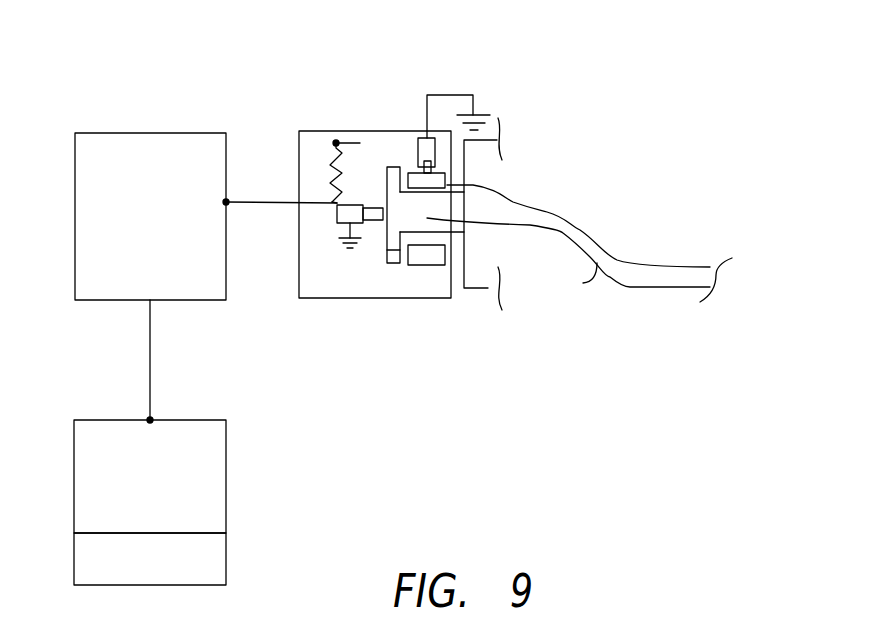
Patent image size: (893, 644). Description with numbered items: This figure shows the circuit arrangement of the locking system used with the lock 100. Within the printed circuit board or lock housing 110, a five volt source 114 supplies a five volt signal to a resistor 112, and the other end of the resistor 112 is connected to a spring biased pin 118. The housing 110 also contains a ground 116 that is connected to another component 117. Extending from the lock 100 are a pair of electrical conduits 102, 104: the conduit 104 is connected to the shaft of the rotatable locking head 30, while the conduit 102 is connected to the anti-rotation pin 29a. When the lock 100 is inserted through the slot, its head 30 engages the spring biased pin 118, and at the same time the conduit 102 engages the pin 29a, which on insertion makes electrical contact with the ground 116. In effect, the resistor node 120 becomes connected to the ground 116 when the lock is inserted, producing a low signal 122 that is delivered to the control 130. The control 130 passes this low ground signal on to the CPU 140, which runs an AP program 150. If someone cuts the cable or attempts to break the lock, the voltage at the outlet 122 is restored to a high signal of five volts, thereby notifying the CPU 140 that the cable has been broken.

The anti-rotation pin 29a is at (435, 182).
The rotatable locking head 30 is at (393, 243).
The lock 100 is at (478, 273).
The electrical conduit 102 is at (632, 260).
The electrical conduit 104 is at (571, 278).
The lock housing 110 is at (373, 288).
The resistor 112 is at (333, 158).
The 5 volt source 114 is at (349, 142).
The ground 116 is at (450, 95).
The component 117 is at (418, 155).
The spring biased pin 118 is at (373, 223).
The resistor node 120 is at (330, 202).
The signal 122 is at (279, 204).
The control 130 is at (75, 180).
The CPU 140 is at (208, 492).
The AP program 150 is at (215, 553).